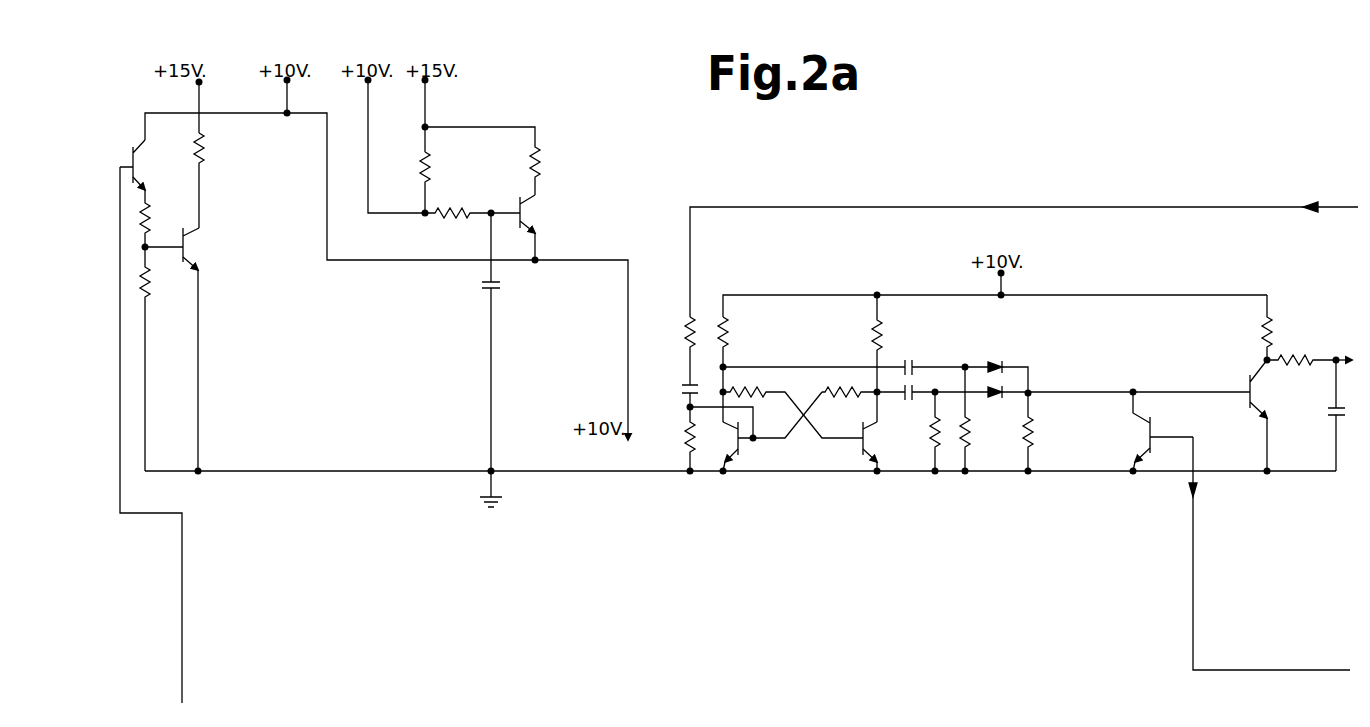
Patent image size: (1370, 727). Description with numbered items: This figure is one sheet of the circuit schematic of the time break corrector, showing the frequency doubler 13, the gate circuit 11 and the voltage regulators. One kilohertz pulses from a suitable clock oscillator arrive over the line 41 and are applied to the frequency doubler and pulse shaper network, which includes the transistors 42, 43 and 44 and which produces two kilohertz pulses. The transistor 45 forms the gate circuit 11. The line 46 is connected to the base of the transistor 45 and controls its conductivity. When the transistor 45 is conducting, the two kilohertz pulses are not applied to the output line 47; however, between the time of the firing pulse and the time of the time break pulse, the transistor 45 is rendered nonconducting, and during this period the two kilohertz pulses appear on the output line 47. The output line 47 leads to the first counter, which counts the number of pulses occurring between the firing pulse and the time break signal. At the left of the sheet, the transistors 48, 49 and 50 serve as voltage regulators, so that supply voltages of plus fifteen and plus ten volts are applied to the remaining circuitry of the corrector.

The gate circuit 11 is at (1151, 521).
The frequency doubler 13 is at (799, 507).
The line 41 is at (1010, 207).
The transistor 42 is at (741, 449).
The transistor 43 is at (863, 450).
The transistor 44 is at (1250, 383).
The transistor 45 is at (1147, 430).
The line 46 is at (1196, 482).
The output line 47 is at (1350, 358).
The transistor 48 is at (149, 305).
The transistor 49 is at (186, 242).
The transistor 50 is at (524, 212).